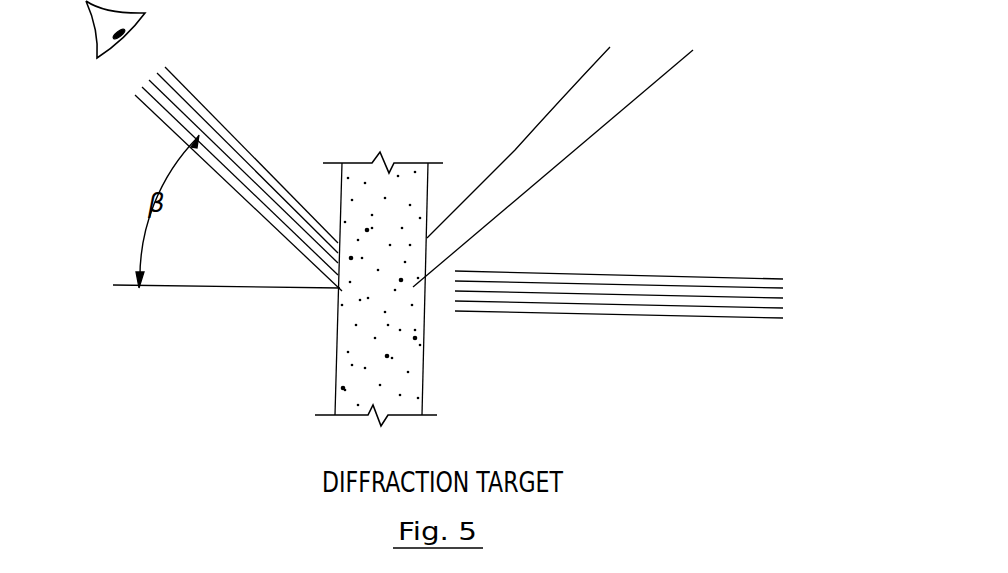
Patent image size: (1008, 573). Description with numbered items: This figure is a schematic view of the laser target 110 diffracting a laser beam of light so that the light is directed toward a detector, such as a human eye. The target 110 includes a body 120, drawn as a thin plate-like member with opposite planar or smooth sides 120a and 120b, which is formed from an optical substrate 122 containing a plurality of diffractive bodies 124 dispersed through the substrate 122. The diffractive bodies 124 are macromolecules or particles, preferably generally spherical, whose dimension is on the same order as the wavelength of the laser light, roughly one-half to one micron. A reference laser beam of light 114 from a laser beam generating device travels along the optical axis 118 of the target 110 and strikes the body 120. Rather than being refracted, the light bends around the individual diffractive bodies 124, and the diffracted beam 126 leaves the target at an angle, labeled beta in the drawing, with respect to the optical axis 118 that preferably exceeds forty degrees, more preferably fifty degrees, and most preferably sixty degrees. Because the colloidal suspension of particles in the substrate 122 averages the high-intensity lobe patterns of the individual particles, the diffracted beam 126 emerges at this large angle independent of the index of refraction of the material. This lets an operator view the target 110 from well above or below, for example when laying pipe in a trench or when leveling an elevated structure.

The laser target 110 is at (466, 156).
The reference laser beam of light 114 is at (692, 262).
The optical axis 118 is at (197, 288).
The body 120 is at (534, 127).
The planar side 120a is at (336, 356).
The planar side 120b is at (423, 363).
The optical substrate 122 is at (570, 151).
The diffractive bodies 124 is at (400, 250).
The diffracted beam 126 is at (265, 125).